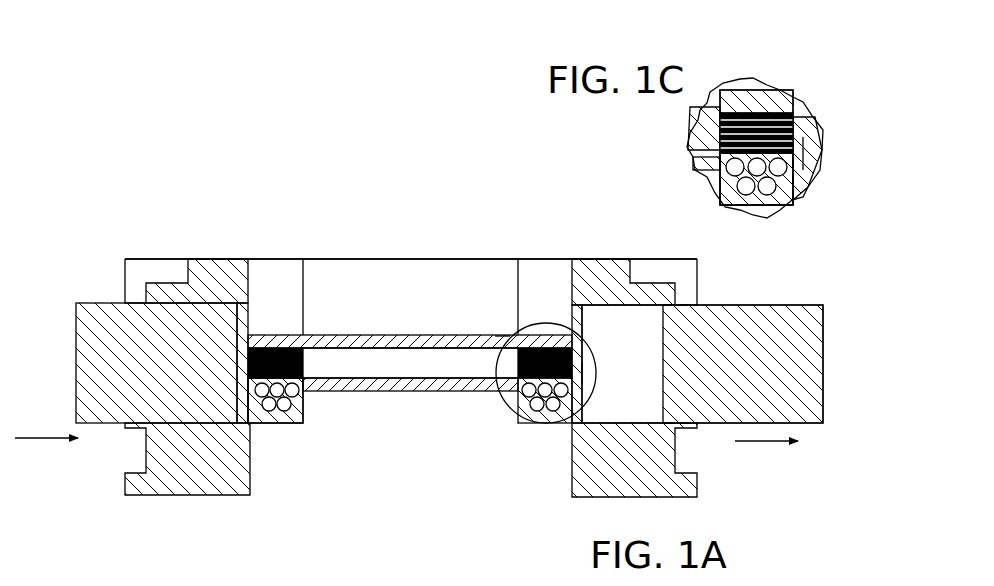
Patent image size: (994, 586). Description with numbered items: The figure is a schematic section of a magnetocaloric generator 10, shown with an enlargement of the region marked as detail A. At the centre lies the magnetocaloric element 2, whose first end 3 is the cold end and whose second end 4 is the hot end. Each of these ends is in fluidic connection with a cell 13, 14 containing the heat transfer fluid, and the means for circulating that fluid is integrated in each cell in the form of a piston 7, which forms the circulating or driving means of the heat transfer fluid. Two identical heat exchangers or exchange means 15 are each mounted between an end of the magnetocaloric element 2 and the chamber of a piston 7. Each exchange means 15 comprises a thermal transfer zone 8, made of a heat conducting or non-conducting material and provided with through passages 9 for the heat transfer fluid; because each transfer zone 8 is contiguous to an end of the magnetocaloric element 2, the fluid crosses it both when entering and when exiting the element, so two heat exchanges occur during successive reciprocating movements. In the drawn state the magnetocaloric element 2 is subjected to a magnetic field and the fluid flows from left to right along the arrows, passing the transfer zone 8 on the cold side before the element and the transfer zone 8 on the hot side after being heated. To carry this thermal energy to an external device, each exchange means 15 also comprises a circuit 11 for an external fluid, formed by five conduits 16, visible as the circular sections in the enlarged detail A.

In FIG. 1A, the magnetocaloric generator 10 is at (109, 187).
In FIG. 1A, the piston 7 is at (102, 306).
In FIG. 1A, the cell 13 is at (229, 357).
In FIG. 1A, the thermal transfer zone 8 is at (260, 352).
In FIG. 1C, the thermal transfer zone 8 is at (803, 128).
In FIG. 1A, the first end 3 is at (318, 336).
In FIG. 1A, the second end 4 is at (503, 340).
In FIG. 1A, the cell 14 is at (580, 347).
In FIG. 1A, the magnetocaloric element 2 is at (382, 358).
In FIG. 1A, the conduits 16 is at (272, 407).
In FIG. 1C, the conduits 16 is at (736, 173).
In FIG. 1A, the circuit 11 is at (306, 414).
In FIG. 1C, the circuit 11 is at (709, 211).
In FIG. 1A, the exchange means 15 is at (410, 447).
In FIG. 1C, the through passages 9 is at (747, 113).
In FIG. 1A, the detail A is at (512, 405).